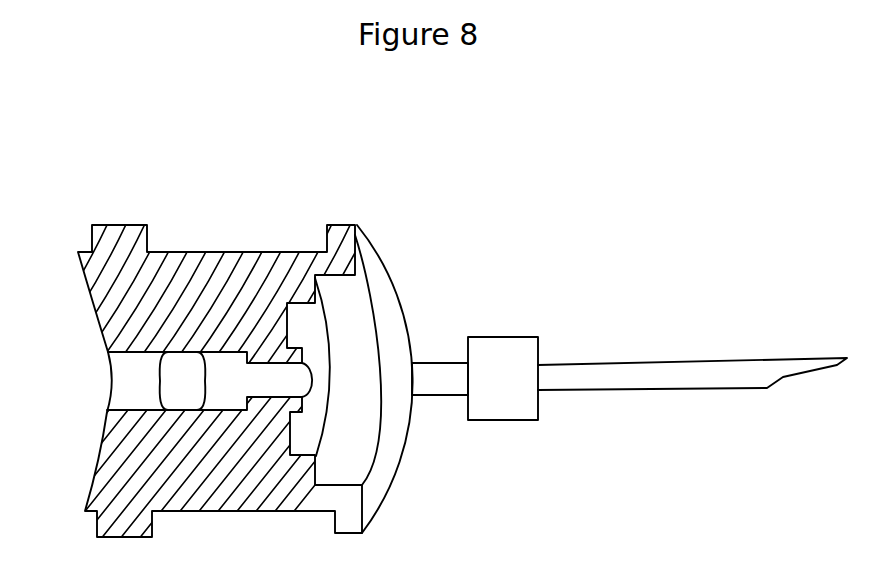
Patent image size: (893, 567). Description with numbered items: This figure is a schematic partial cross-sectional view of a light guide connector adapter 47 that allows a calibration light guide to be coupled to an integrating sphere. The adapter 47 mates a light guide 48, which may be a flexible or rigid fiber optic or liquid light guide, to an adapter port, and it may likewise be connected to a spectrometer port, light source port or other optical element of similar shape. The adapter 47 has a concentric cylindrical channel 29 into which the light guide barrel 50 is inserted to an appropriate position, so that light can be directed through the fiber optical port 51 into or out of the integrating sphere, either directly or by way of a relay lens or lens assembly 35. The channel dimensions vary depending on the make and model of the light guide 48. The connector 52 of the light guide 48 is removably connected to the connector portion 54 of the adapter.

The light guide connector adapter 47 is at (246, 226).
The concentric cylindrical channel 29 is at (124, 378).
The relay lens or lens assembly 35 is at (172, 398).
The connector portion 54 is at (298, 352).
The fiber optical port 51 is at (406, 372).
The light guide barrel 50 is at (432, 362).
The connector 52 is at (521, 337).
The light guide 48 is at (671, 350).